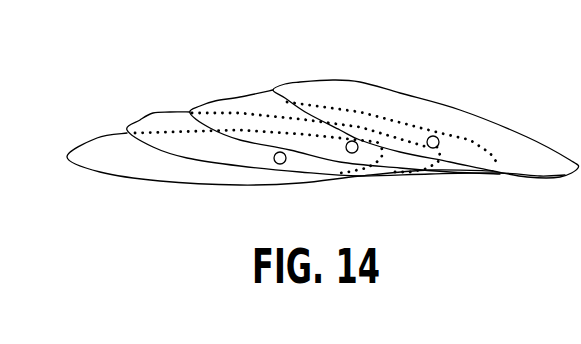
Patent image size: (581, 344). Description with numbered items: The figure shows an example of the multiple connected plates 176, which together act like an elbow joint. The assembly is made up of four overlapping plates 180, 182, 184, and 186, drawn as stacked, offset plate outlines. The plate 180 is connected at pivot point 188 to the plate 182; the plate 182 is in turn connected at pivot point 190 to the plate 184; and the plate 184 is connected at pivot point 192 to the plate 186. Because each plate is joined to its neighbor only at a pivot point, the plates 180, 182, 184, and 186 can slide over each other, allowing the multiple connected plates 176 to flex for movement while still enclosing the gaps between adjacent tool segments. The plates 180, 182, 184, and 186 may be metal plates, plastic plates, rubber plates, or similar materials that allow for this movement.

The multiple connected plates 176 is at (173, 52).
The plate 180 is at (97, 138).
The plate 182 is at (160, 112).
The plate 184 is at (248, 97).
The plate 186 is at (327, 81).
The pivot point 188 is at (282, 164).
The pivot point 190 is at (352, 153).
The pivot point 192 is at (433, 148).